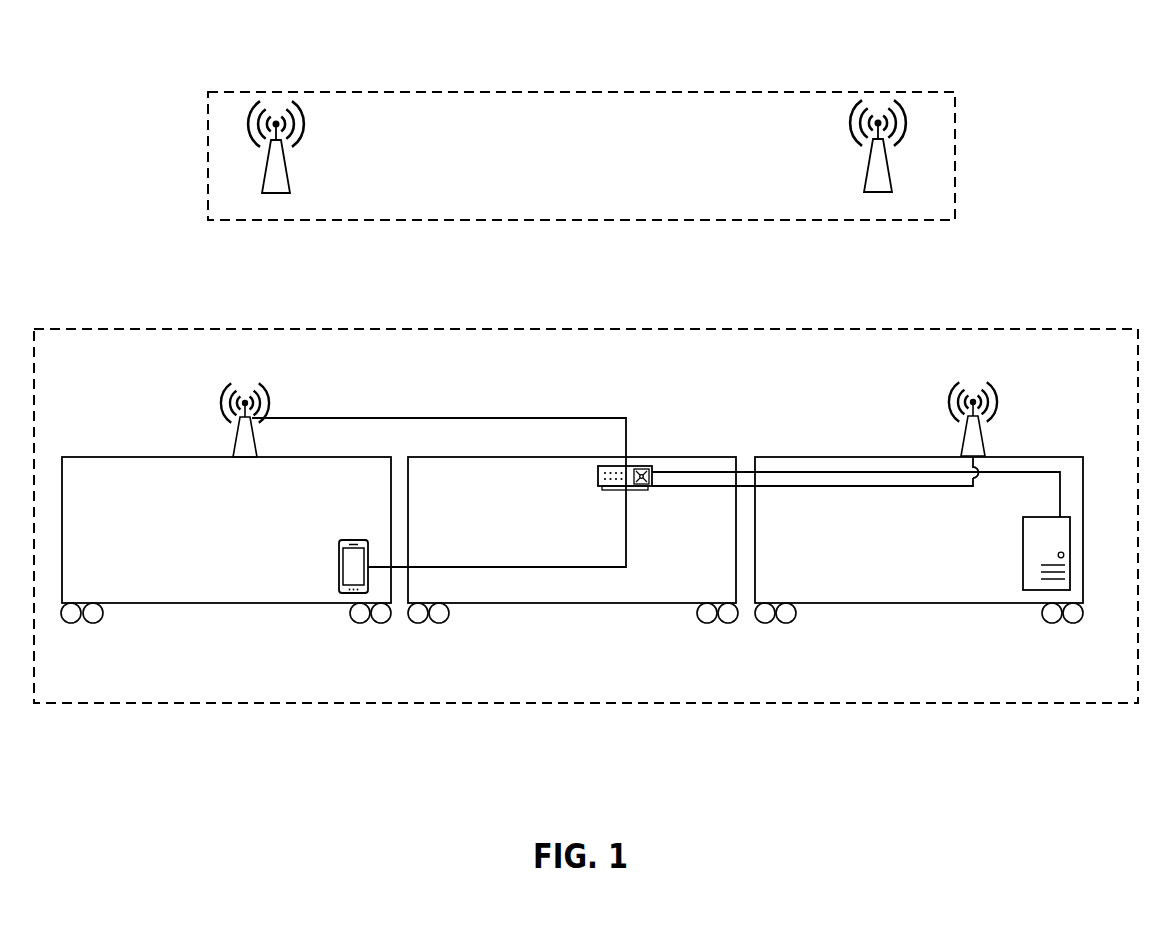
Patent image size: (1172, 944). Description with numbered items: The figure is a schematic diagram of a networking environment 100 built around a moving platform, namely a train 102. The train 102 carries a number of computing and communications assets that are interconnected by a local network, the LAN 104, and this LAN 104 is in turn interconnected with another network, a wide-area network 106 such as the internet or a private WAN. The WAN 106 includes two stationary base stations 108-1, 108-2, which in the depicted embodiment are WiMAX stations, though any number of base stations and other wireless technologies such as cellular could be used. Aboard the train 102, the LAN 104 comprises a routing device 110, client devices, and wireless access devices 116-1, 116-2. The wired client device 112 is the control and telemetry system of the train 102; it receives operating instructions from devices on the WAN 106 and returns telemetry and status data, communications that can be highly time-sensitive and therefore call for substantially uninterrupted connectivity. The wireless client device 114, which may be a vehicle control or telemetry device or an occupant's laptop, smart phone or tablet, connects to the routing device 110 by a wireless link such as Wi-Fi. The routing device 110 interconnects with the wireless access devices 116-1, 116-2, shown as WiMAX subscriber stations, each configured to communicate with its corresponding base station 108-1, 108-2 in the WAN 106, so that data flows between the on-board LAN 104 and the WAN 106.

The networking environment 100 is at (137, 123).
The train 102 is at (244, 635).
The LAN 104 is at (1107, 696).
The wide-area network 106 is at (943, 212).
The base station 108-1 is at (276, 143).
The base station 108-2 is at (880, 147).
The routing device 110 is at (626, 474).
The wired client device 112 is at (1046, 553).
The wireless client device 114 is at (355, 567).
The wireless access device 116-1 is at (251, 418).
The wireless access device 116-2 is at (979, 422).